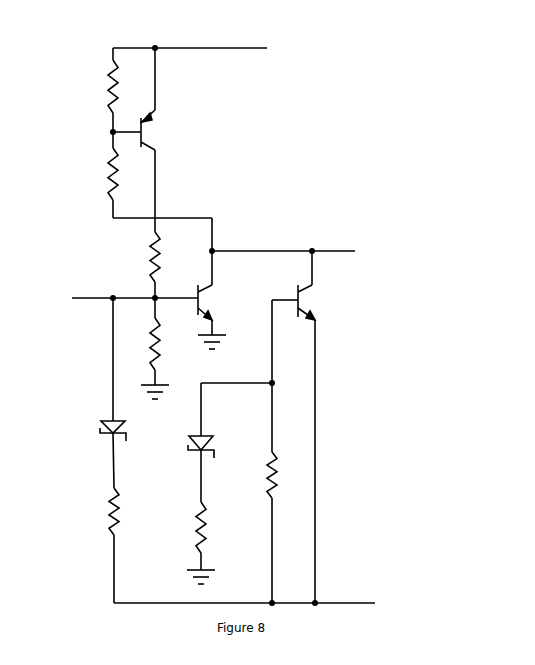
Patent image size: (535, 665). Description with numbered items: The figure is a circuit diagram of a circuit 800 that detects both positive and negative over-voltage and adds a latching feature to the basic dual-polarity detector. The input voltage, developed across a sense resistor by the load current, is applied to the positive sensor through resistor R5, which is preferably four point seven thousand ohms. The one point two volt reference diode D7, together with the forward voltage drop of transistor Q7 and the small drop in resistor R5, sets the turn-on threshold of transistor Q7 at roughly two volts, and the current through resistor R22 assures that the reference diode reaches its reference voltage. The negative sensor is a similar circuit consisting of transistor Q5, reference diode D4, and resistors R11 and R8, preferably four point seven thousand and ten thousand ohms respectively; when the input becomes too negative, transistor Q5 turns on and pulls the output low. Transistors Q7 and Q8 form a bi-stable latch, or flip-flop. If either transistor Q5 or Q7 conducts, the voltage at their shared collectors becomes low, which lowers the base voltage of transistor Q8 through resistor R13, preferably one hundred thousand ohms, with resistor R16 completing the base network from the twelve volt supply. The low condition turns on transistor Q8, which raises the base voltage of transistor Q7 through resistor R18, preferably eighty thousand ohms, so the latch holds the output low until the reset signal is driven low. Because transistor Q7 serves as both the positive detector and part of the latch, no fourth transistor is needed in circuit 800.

The circuit 800 is at (450, 455).
The resistor R16 is at (102, 86).
The resistor R13 is at (102, 174).
The transistor Q8 is at (146, 130).
The resistor R18 is at (143, 257).
The resistor R22 is at (169, 344).
The transistor Q7 is at (217, 302).
The transistor Q5 is at (319, 302).
The reference diode D7 is at (94, 436).
The reference diode D4 is at (183, 456).
The resistor R5 is at (102, 511).
The resistor R11 is at (186, 527).
The resistor R8 is at (262, 475).